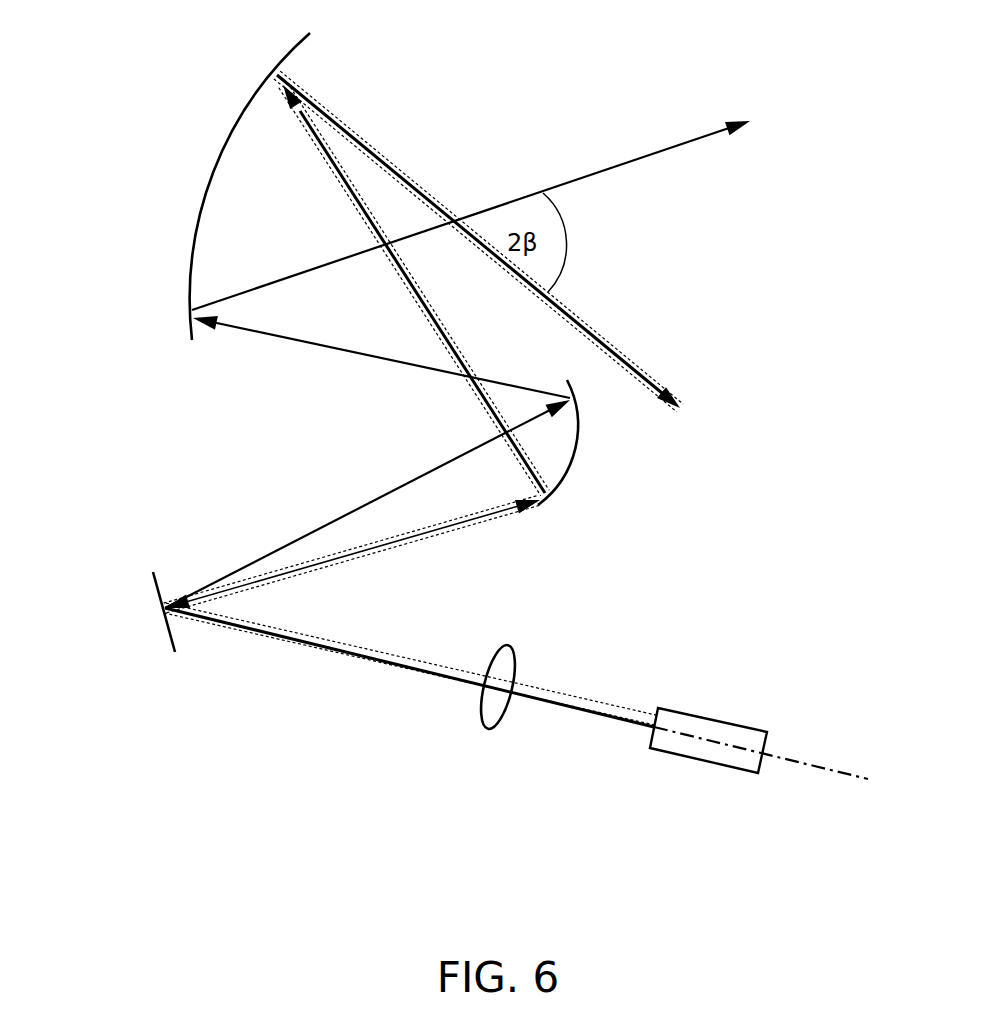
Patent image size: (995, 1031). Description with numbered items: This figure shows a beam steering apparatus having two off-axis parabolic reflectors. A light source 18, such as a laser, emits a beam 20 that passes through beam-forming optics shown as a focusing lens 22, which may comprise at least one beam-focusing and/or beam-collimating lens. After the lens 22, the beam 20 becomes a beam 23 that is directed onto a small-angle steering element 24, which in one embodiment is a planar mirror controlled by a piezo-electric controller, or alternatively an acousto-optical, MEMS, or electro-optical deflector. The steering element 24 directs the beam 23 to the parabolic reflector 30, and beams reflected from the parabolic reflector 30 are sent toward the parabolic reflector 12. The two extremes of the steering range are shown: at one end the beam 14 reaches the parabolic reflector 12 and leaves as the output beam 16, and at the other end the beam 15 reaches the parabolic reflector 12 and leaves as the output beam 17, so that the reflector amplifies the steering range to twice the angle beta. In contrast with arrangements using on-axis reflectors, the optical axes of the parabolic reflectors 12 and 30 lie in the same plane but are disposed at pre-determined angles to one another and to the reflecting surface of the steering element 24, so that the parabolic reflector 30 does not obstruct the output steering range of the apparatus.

The parabolic reflector 12 is at (262, 90).
The beam 14 is at (490, 412).
The beam 15 is at (290, 343).
The beam 16 is at (625, 356).
The beam 17 is at (682, 141).
The light source 18 is at (710, 718).
The beam 20 is at (548, 700).
The focusing lens 22 is at (515, 661).
The beam 23 is at (407, 668).
The steering element 24 is at (157, 592).
The parabolic reflector 30 is at (565, 470).